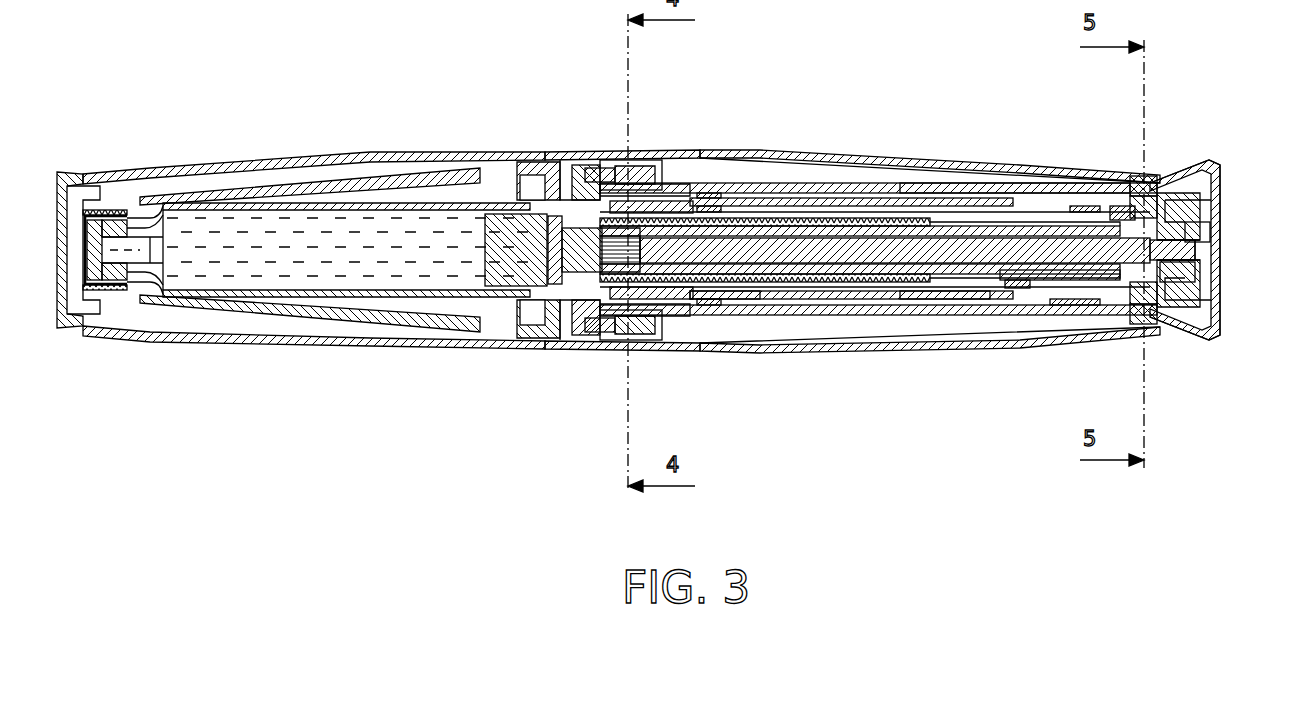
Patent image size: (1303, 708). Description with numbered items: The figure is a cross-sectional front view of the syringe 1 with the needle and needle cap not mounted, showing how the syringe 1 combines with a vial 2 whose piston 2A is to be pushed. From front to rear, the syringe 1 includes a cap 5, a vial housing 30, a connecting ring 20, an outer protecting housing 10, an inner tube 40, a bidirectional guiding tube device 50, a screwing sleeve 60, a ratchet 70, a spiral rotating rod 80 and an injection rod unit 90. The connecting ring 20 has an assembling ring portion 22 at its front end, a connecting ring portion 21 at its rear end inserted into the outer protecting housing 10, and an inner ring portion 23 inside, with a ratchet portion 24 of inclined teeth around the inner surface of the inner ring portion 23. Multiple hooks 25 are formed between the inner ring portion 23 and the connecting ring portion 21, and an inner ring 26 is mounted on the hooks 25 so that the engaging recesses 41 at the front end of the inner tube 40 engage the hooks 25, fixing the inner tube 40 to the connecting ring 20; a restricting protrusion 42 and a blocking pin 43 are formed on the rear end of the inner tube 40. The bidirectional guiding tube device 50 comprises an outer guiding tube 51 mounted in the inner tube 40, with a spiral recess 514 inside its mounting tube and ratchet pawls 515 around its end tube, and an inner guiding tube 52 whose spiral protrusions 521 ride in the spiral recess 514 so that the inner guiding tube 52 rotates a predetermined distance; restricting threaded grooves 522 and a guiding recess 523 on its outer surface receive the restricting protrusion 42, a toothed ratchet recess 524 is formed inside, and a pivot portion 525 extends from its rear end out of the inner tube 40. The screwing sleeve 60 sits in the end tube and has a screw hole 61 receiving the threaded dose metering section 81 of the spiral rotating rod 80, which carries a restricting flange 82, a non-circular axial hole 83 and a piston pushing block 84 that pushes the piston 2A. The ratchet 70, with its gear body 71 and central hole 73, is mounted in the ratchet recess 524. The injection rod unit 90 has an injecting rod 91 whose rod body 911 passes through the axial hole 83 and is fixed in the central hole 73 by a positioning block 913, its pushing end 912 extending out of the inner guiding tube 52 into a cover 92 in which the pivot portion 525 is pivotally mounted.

The syringe 1 is at (952, 94).
The vial 2 is at (342, 190).
The piston 2A is at (490, 224).
The cap 5 is at (152, 160).
The outer protecting housing 10 is at (860, 136).
The connecting ring 20 is at (628, 146).
The connecting ring portion 21 is at (640, 185).
The assembling ring portion 22 is at (526, 174).
The inner ring portion 23 is at (655, 203).
The ratchet portion 24 is at (650, 282).
The hooks 25 is at (615, 188).
The inner ring 26 is at (620, 288).
The vial housing 30 is at (238, 180).
The inner tube 40 is at (878, 186).
The engaging recesses 41 is at (590, 198).
The restricting protrusion 42 is at (1143, 193).
The blocking pin 43 is at (1145, 312).
The bidirectional guiding tube device 50 is at (985, 203).
The outer guiding tube 51 is at (928, 193).
The inner guiding tube 52 is at (790, 198).
The spiral recess 514 is at (708, 212).
The ratchet pawls 515 is at (638, 278).
The spiral protrusions 521 is at (713, 213).
The restricting threaded grooves 522 is at (1076, 305).
The guiding recess 523 is at (1080, 206).
The ratchet recess 524 is at (1196, 247).
The pivot portion 525 is at (1197, 280).
The screwing sleeve 60 is at (628, 290).
The screw hole 61 is at (605, 268).
The ratchet 70 is at (1172, 320).
The gear body 71 is at (1130, 196).
The central hole 73 is at (1197, 262).
The spiral rotating rod 80 is at (897, 278).
The dose metering section 81 is at (810, 290).
The restricting flange 82 is at (947, 290).
The axial hole 83 is at (745, 290).
The piston pushing block 84 is at (545, 250).
The injection rod unit 90 is at (1213, 154).
The injecting rod 91 is at (992, 280).
The rod body 911 is at (1013, 288).
The pushing end 912 is at (1210, 232).
The positioning block 913 is at (1122, 206).
The cover 92 is at (1206, 190).